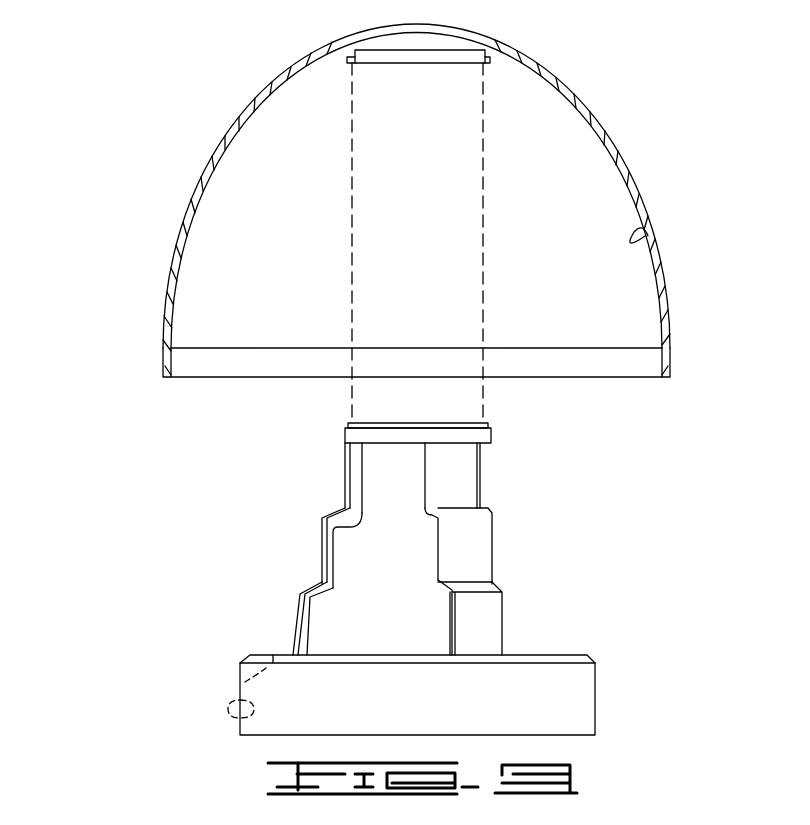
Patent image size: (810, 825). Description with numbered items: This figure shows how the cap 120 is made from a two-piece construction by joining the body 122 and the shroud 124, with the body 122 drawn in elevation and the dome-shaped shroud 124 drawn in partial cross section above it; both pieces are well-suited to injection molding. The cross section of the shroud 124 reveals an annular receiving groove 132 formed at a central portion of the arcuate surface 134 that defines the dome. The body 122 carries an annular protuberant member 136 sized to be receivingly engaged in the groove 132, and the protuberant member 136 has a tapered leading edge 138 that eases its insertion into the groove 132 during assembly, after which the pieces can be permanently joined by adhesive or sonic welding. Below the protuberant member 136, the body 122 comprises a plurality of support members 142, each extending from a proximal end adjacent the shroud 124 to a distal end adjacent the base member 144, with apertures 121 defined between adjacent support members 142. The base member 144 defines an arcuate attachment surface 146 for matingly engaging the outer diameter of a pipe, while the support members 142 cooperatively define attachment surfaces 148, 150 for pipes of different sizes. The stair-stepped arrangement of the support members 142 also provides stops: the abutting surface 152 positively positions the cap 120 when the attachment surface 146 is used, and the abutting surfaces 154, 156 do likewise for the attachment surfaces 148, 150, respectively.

The cap 120 is at (148, 128).
The apertures 121 is at (430, 630).
The body 122 is at (478, 482).
The shroud 124 is at (603, 145).
The annular receiving groove 132 is at (347, 60).
The arcuate surface 134 is at (645, 236).
The annular protuberant member 136 is at (487, 425).
The tapered leading edge 138 is at (385, 424).
The support members 142 is at (317, 557).
The base member 144 is at (598, 703).
The arcuate attachment surface 146 is at (240, 712).
The attachment surface 148 is at (310, 630).
The attachment surface 150 is at (335, 562).
The abutting surface 152 is at (268, 658).
The abutting surface 154 is at (302, 610).
The abutting surface 156 is at (322, 522).